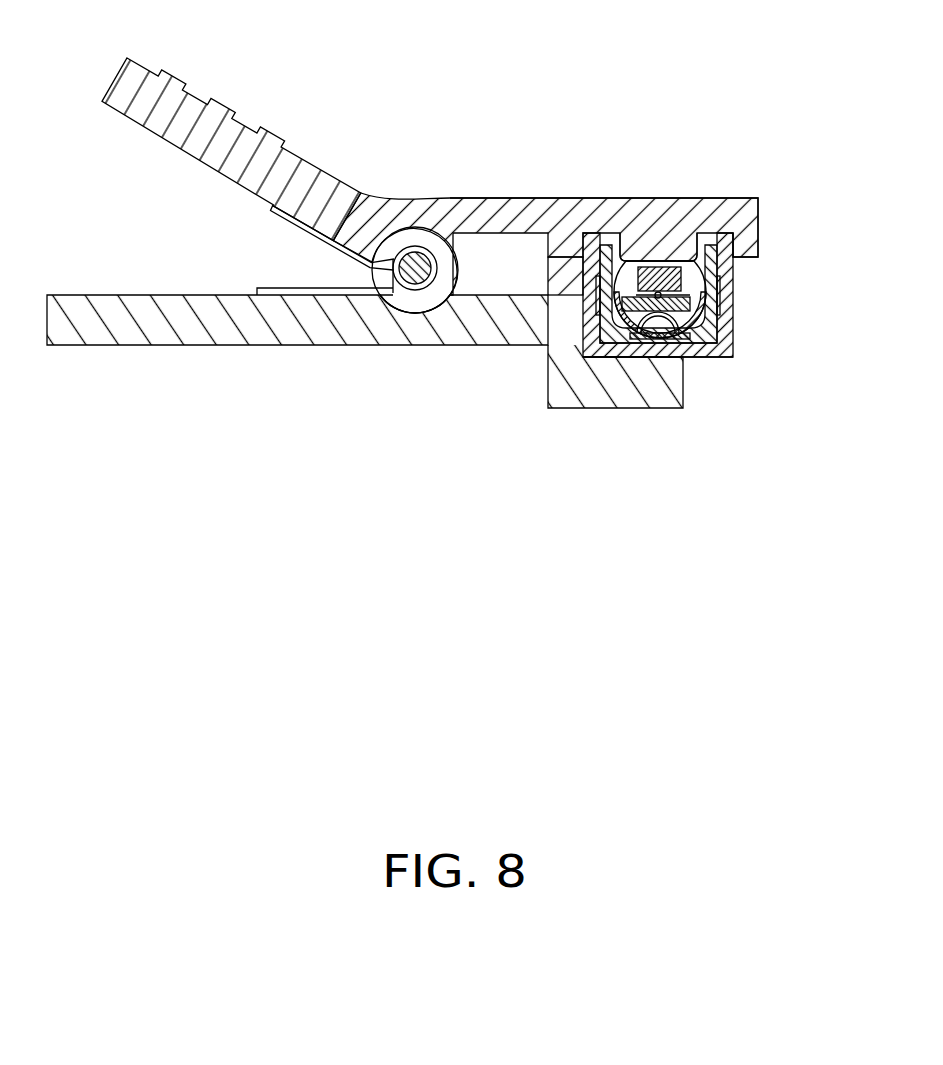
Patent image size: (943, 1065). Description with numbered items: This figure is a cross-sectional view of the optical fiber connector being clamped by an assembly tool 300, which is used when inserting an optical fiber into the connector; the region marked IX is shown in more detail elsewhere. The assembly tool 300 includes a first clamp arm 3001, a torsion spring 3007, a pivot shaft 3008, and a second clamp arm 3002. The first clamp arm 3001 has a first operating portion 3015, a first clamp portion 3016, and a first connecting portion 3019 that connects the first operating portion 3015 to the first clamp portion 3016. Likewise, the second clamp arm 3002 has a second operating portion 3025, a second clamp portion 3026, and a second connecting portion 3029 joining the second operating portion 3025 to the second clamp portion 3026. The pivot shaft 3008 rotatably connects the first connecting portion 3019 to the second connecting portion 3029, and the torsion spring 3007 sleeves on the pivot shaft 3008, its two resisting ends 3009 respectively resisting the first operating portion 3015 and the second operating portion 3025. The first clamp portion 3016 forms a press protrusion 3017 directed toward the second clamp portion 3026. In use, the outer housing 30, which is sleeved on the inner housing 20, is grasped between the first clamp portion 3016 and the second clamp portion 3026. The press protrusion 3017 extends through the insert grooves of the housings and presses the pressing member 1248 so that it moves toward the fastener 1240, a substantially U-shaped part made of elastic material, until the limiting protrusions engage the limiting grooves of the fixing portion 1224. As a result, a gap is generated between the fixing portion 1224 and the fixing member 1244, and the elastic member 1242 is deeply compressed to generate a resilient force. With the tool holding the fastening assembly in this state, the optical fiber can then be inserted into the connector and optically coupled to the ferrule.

The assembly tool 300 is at (499, 176).
The first clamp arm 3001 is at (115, 85).
The first operating portion 3015 is at (190, 127).
The second clamp arm 3002 is at (58, 303).
The torsion spring 3007 is at (393, 300).
The pivot shaft 3008 is at (405, 258).
The resisting ends 3009 is at (271, 290).
The first clamp portion 3016 is at (722, 210).
The press protrusion 3017 is at (662, 250).
The first connecting portion 3019 is at (430, 212).
The second operating portion 3025 is at (112, 318).
The second clamp portion 3026 is at (613, 383).
The second connecting portion 3029 is at (421, 325).
The outer housing 30 is at (734, 251).
The inner housing 20 is at (705, 349).
The fastener 1240 is at (700, 342).
The fixing portion 1224 is at (684, 300).
The pressing member 1248 is at (672, 278).
The fixing member 1244 is at (676, 320).
The elastic member 1242 is at (690, 337).
The section indicator IX is at (583, 225).